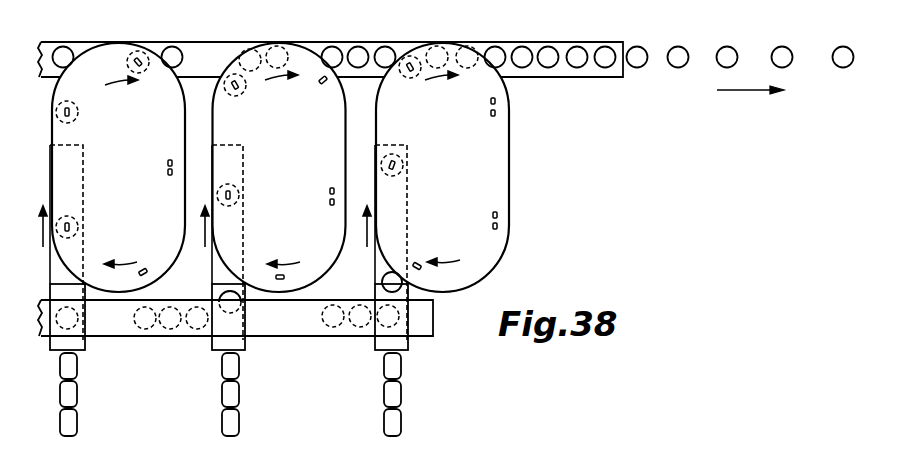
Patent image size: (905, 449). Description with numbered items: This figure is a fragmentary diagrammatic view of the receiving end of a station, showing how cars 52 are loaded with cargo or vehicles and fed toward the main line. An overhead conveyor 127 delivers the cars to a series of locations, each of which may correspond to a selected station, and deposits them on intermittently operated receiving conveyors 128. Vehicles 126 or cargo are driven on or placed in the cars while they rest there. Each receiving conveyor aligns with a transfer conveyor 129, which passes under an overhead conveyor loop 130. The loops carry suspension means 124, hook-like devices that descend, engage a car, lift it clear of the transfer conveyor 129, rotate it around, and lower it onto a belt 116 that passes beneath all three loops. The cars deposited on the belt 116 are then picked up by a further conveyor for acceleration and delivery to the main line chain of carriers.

The cars 52 is at (177, 49).
The belt 116 is at (305, 42).
The suspension means 124 is at (331, 206).
The vehicles 126 is at (73, 392).
The overhead conveyor 127 is at (107, 330).
The receiving conveyors 128 is at (373, 340).
The transfer conveyors 129 is at (84, 190).
The overhead conveyor loops 130 is at (137, 162).